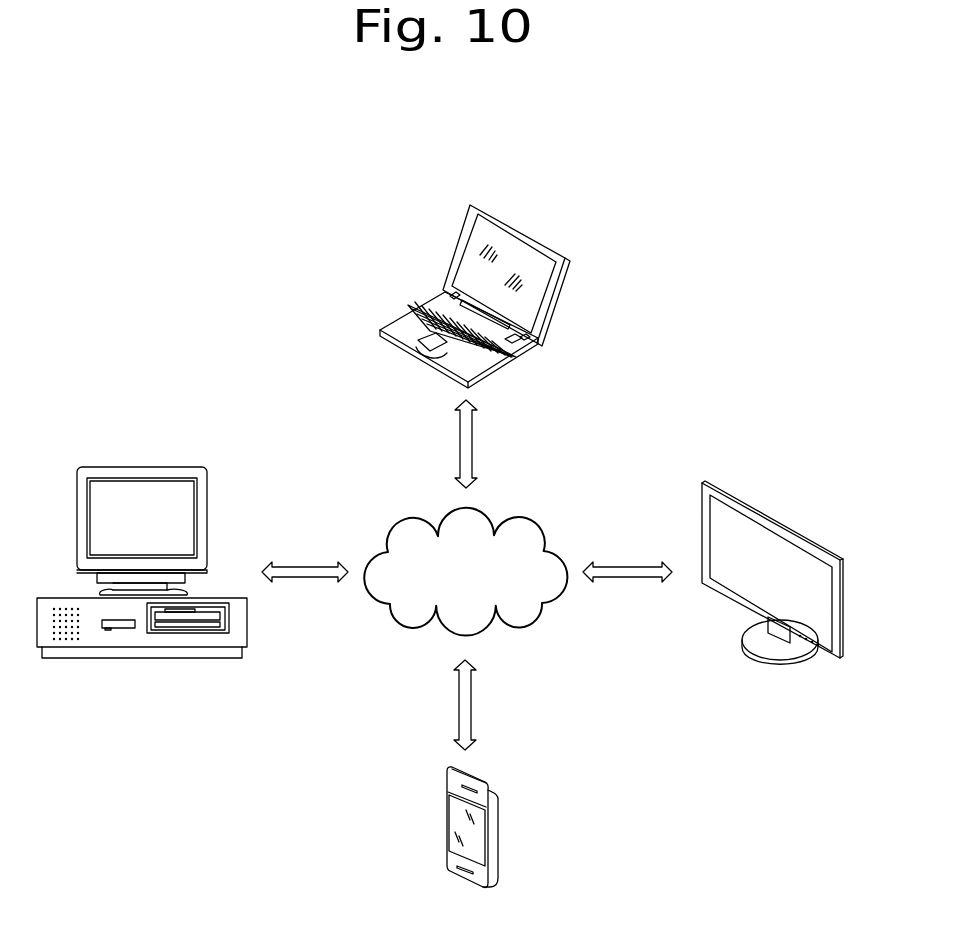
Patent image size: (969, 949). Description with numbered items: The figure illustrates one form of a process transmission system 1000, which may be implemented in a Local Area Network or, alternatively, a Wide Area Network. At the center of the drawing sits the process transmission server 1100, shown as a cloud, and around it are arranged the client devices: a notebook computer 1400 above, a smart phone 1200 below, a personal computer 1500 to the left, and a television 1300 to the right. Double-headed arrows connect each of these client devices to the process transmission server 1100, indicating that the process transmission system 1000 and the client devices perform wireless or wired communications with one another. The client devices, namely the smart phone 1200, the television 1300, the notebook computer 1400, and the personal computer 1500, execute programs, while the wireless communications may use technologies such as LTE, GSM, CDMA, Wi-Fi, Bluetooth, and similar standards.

The process transmission system 1000 is at (797, 170).
The process transmission server 1100 is at (534, 510).
The smart phone 1200 is at (503, 837).
The television 1300 is at (791, 521).
The notebook computer 1400 is at (556, 311).
The personal computer 1500 is at (186, 455).